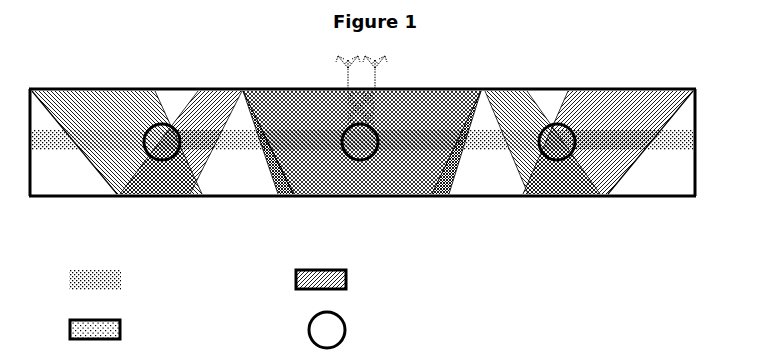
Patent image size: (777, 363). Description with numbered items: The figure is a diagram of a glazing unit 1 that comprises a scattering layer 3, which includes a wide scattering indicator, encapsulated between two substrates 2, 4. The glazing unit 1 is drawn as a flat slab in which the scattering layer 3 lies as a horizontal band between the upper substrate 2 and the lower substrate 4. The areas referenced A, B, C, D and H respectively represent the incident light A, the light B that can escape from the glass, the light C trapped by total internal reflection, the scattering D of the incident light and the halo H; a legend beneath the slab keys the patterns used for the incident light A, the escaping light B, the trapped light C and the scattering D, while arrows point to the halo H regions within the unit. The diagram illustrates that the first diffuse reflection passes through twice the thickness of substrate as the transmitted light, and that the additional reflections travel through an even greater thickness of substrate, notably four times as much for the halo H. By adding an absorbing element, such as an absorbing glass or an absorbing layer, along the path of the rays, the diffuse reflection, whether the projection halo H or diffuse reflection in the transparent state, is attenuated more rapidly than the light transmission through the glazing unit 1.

The glazing unit 1 is at (687, 60).
The substrate 2 is at (698, 117).
The scattering layer 3 is at (698, 141).
The substrate 4 is at (698, 166).
The halo H is at (550, 154).
The incident light A is at (107, 281).
The light that can escape from the glass B is at (107, 330).
The light trapped by total internal reflection C is at (331, 281).
The scattering of the incident light D is at (339, 330).